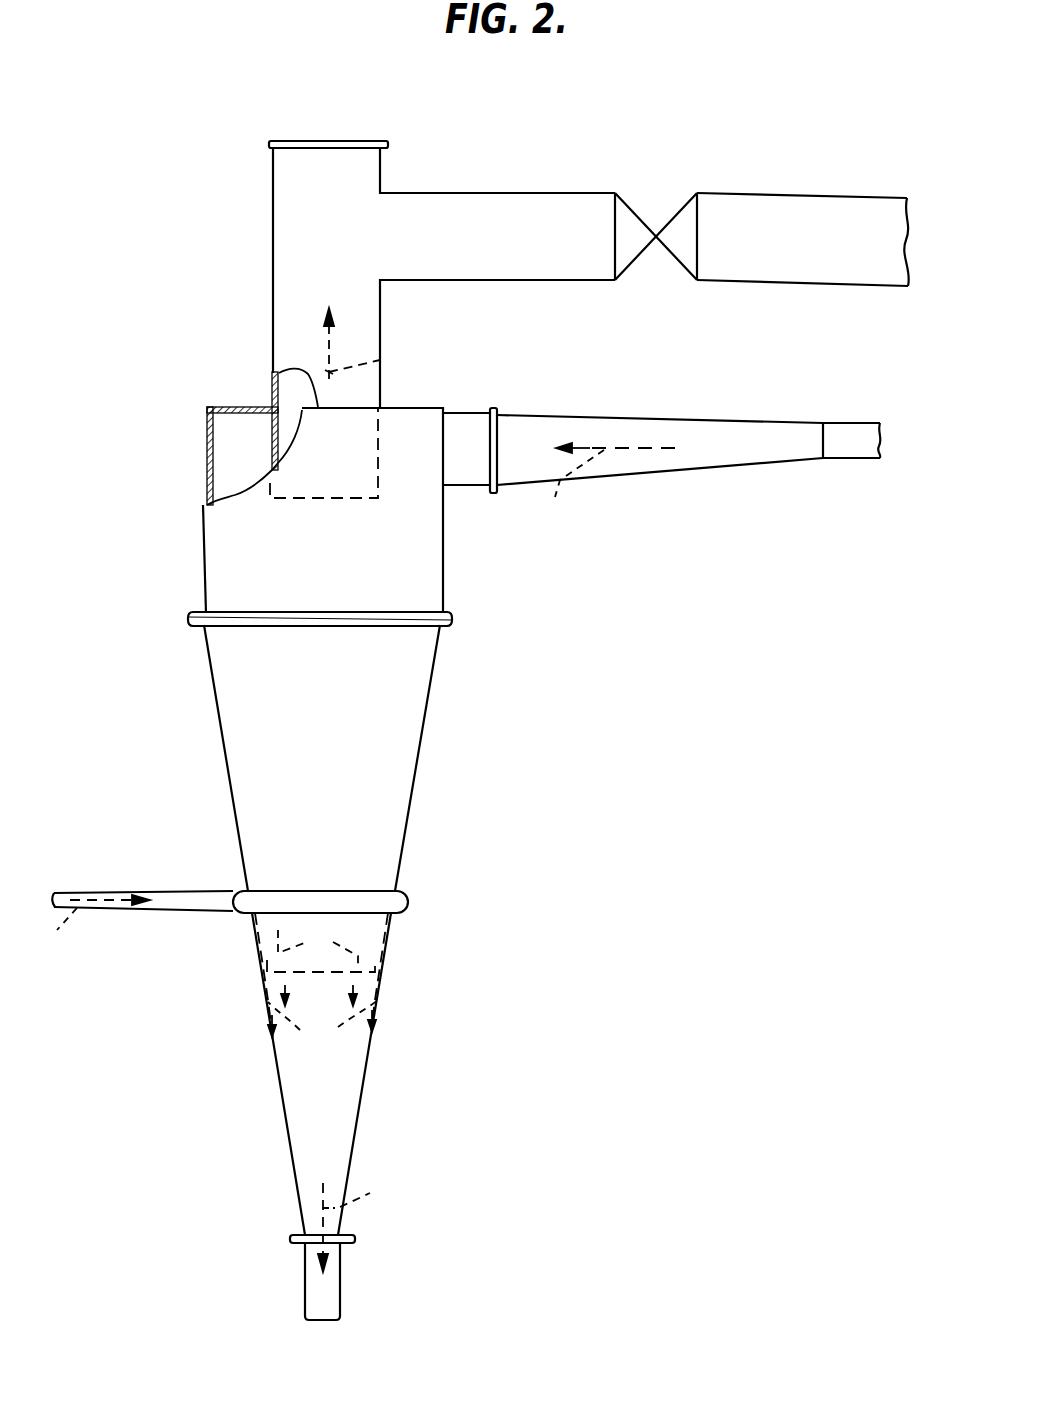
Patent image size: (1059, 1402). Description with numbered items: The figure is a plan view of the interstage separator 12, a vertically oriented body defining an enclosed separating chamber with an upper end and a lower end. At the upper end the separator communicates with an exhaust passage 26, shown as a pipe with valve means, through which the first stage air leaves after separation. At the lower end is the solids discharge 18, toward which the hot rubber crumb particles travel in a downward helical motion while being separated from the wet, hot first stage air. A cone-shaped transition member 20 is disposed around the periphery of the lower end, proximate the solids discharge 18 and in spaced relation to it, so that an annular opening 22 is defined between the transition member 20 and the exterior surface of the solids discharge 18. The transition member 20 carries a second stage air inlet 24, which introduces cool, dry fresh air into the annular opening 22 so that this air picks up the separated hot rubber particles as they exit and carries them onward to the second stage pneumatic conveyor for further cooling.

The interstage separator 12 is at (398, 742).
The exhaust passage 26 is at (287, 283).
The second stage air inlet 24 is at (243, 890).
The annular opening 22 is at (398, 892).
The solids discharge 18 is at (366, 991).
The cone-shaped transition member 20 is at (332, 1131).